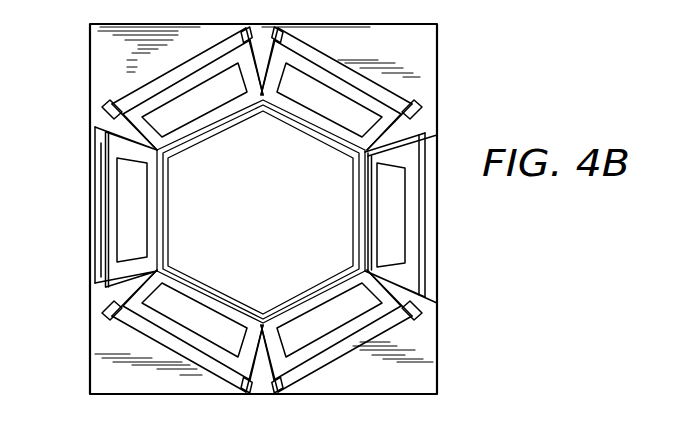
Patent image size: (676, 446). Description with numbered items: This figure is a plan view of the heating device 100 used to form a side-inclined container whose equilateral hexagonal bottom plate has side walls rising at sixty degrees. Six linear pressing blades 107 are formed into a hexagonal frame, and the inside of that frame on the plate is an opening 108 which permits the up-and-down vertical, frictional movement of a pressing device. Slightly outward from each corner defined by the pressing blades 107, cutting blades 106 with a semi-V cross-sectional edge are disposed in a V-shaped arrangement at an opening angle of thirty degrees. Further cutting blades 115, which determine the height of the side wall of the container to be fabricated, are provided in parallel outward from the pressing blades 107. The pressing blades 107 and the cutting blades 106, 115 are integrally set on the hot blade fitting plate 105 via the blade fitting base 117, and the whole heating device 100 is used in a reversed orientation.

The heating device 100 is at (413, 92).
The hot blade fitting plate 105 is at (108, 88).
The cutting blade 106 is at (395, 292).
The pressing blade 107 is at (365, 185).
The opening 108 is at (268, 224).
The cutting blade 115 is at (102, 201).
The blade fitting base 117 is at (412, 243).